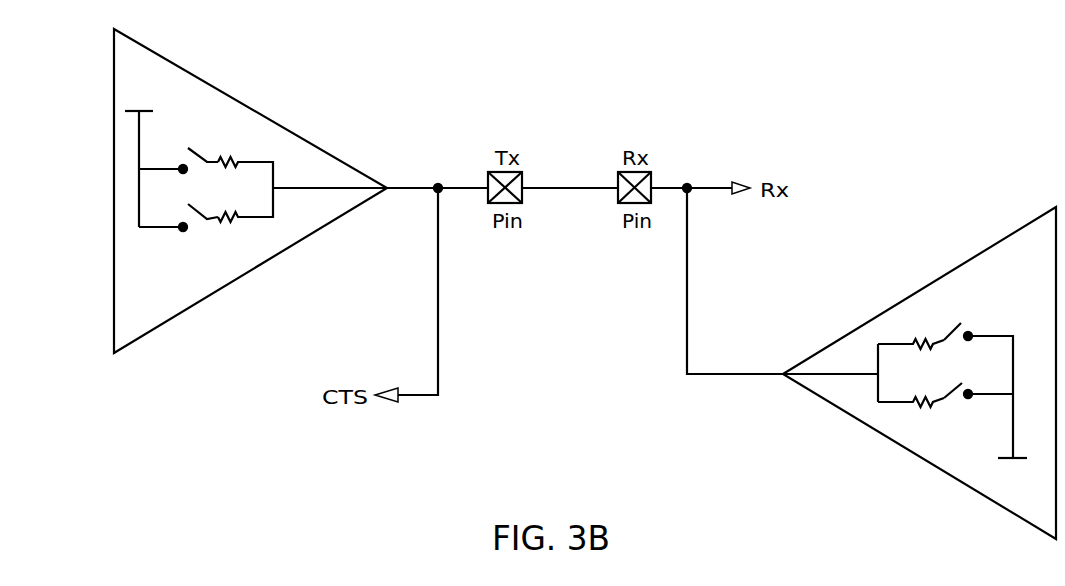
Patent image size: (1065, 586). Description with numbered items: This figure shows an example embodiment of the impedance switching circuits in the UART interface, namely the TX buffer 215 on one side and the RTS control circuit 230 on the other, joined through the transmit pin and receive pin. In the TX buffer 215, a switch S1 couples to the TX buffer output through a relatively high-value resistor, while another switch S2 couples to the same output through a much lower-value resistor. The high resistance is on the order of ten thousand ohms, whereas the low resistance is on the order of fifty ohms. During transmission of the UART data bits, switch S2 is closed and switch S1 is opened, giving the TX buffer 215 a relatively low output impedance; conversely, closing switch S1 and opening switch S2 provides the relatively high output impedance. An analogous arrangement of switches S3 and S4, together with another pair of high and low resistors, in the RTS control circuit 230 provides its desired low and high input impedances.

The TX buffer 215 is at (250, 190).
The RTS control circuit 230 is at (919, 370).
The switch S1 is at (200, 143).
The switch S2 is at (198, 231).
The switch S3 is at (964, 348).
The switch S4 is at (964, 405).